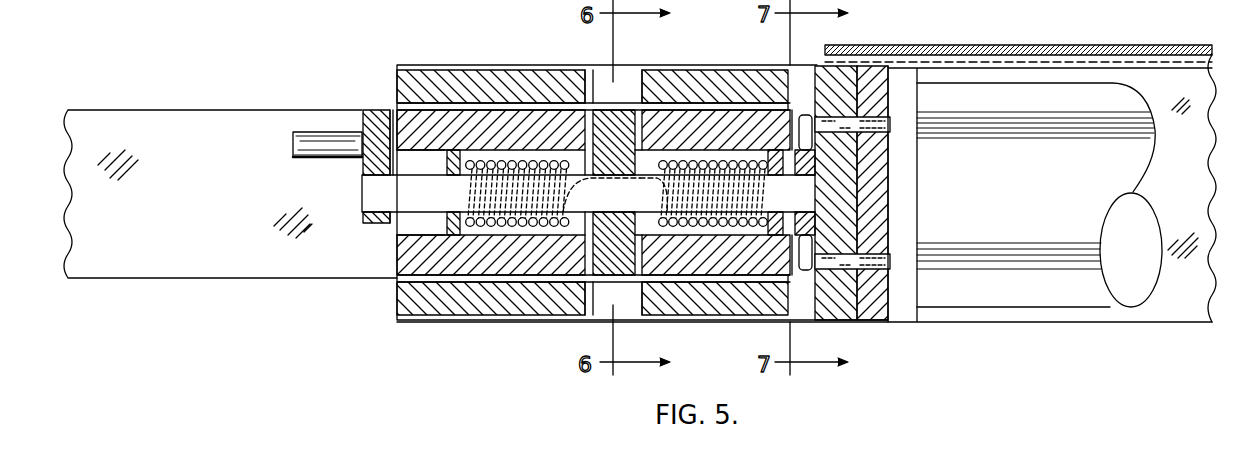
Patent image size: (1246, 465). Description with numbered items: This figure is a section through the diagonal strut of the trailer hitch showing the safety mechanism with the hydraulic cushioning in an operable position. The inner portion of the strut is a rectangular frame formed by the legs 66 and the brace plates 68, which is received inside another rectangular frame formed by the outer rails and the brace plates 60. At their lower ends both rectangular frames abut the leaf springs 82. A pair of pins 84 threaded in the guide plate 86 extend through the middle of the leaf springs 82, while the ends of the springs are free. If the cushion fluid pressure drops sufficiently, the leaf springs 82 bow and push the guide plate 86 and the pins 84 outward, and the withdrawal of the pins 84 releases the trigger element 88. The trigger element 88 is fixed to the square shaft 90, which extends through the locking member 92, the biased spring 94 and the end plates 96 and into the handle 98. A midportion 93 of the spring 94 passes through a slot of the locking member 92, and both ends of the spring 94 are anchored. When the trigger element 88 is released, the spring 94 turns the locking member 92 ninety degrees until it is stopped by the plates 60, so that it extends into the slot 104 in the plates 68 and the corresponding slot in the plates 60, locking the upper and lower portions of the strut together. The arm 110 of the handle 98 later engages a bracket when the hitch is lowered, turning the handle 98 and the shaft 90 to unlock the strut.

The transverse brace plates 60 is at (705, 78).
The parallel rails 66 is at (200, 125).
The upper transverse brace plates 68 is at (472, 120).
The leaf springs 82 is at (837, 318).
The pins 84 is at (880, 125).
The guide plate 86 is at (878, 185).
The trigger element 88 is at (800, 152).
The square shaft 90 is at (432, 203).
The locking member 92 is at (613, 120).
The midportion of spring 93 is at (641, 195).
The biased spring 94 is at (726, 192).
The end plates 96 is at (447, 166).
The handle 98 is at (365, 223).
The slot 104 is at (598, 78).
The arm 110 is at (293, 145).